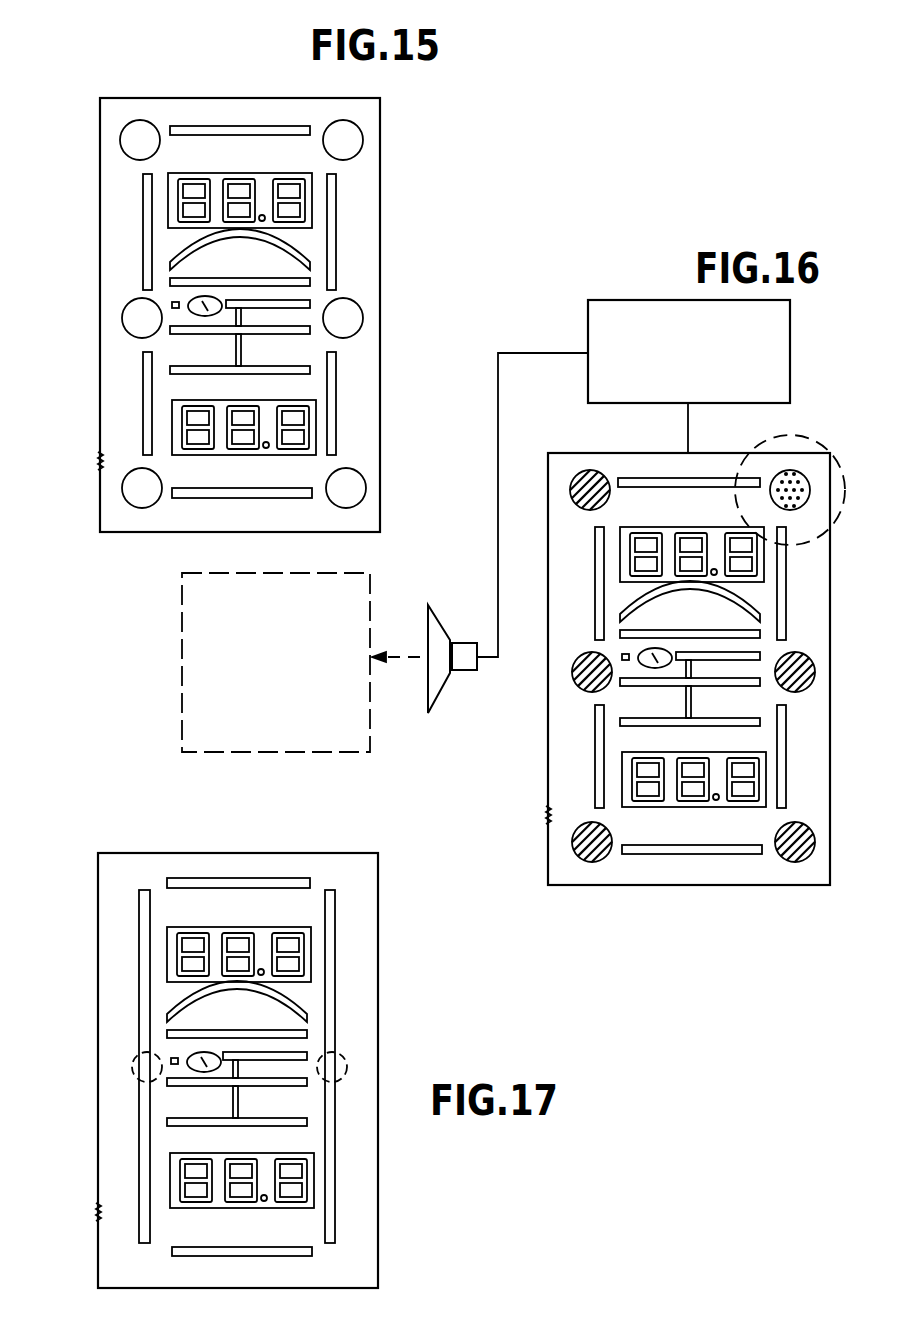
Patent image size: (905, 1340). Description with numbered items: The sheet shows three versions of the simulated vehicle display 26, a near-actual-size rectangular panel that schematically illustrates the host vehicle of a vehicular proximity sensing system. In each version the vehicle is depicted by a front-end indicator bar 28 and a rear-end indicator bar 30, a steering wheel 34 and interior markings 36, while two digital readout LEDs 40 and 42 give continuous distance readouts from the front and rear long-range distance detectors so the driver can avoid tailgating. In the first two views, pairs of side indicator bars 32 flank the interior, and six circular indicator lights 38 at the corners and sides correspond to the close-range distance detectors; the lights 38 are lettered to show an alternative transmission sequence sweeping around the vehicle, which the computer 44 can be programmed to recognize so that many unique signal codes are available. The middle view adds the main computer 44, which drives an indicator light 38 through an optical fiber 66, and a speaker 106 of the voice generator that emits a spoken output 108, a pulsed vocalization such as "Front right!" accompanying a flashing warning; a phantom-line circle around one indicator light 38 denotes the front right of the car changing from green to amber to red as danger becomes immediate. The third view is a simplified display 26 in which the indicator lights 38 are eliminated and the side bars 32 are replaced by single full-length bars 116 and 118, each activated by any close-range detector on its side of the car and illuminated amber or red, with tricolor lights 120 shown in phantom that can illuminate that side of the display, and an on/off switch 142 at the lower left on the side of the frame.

In FIG. 15, the simulated vehicle display 26 is at (242, 110).
In FIG. 16, the simulated vehicle display 26 is at (588, 455).
In FIG. 17, the simulated vehicle display 26 is at (185, 822).
In FIG. 15, the front-end indicator bar 28 is at (258, 128).
In FIG. 16, the front-end indicator bar 28 is at (700, 480).
In FIG. 17, the front-end indicator bar 28 is at (222, 880).
In FIG. 15, the rear-end indicator bar 30 is at (250, 497).
In FIG. 16, the rear-end indicator bar 30 is at (645, 855).
In FIG. 17, the rear-end indicator bar 30 is at (270, 1250).
In FIG. 15, the side indicator bars 32 is at (146, 188).
In FIG. 16, the side indicator bars 32 is at (598, 545).
In FIG. 15, the steering wheel 34 is at (200, 303).
In FIG. 16, the steering wheel 34 is at (658, 650).
In FIG. 17, the steering wheel 34 is at (200, 1060).
In FIG. 15, the interior markings 36 is at (270, 240).
In FIG. 16, the interior markings 36 is at (715, 596).
In FIG. 17, the interior markings 36 is at (232, 997).
In FIG. 15, the circular indicator lights 38 is at (121, 136).
In FIG. 16, the circular indicator lights 38 is at (815, 455).
In FIG. 15, the digital readout LED 40 is at (312, 178).
In FIG. 16, the digital readout LED 40 is at (674, 528).
In FIG. 17, the digital readout LED 40 is at (262, 932).
In FIG. 15, the digital readout LED 42 is at (268, 400).
In FIG. 16, the digital readout LED 42 is at (670, 800).
In FIG. 17, the digital readout LED 42 is at (225, 1155).
In FIG. 16, the computer 44 is at (628, 300).
In FIG. 16, the optical fiber 66 is at (688, 440).
In FIG. 16, the speaker 106 is at (445, 625).
In FIG. 16, the spoken output 108 is at (182, 678).
In FIG. 17, the full-length side bar 116 is at (143, 905).
In FIG. 17, the full-length side bar 118 is at (335, 963).
In FIG. 17, the tricolor lights 120 is at (345, 1060).
In FIG. 15, the on/off switch 142 is at (100, 463).
In FIG. 16, the on/off switch 142 is at (548, 812).
In FIG. 17, the on/off switch 142 is at (98, 1210).